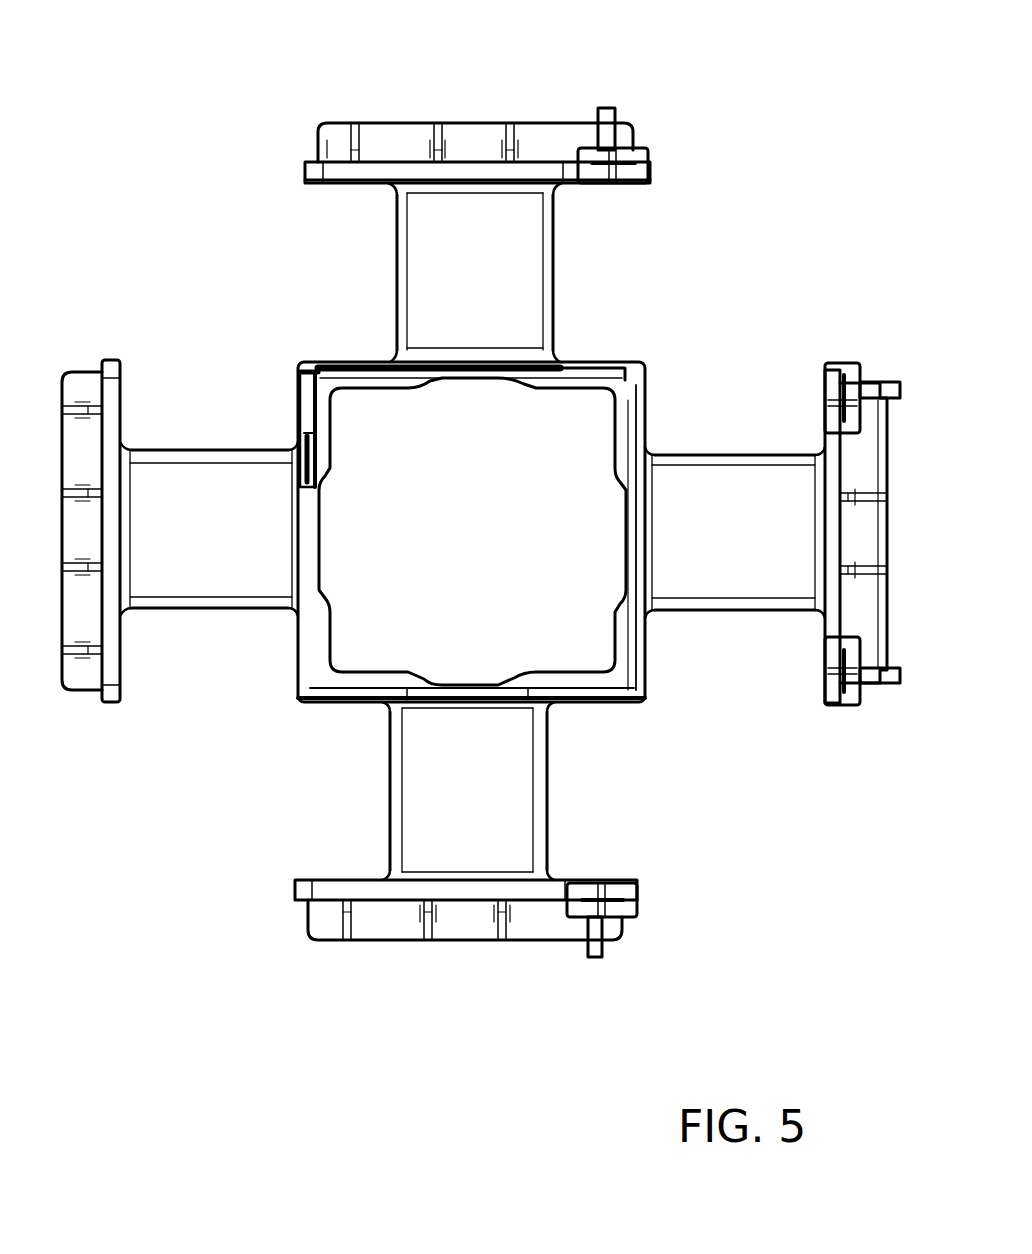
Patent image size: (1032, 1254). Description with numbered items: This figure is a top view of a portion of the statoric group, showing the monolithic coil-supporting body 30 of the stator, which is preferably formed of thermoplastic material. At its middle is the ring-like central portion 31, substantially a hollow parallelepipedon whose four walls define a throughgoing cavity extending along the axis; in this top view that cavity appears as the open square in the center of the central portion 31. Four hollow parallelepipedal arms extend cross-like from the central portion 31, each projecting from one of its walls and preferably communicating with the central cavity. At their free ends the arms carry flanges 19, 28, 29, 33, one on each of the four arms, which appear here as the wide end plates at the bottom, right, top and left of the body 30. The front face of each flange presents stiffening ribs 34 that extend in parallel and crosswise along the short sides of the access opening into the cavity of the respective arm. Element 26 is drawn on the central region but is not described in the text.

The monolithic coil-supporting body 30 is at (805, 187).
The central housing body 26 is at (627, 407).
The ring-like central portion 31 is at (308, 367).
The flange 29 is at (513, 173).
The stiffening rib 34 is at (475, 148).
The flange 19 is at (487, 892).
The flange 33 is at (108, 542).
The flange 28 is at (835, 532).